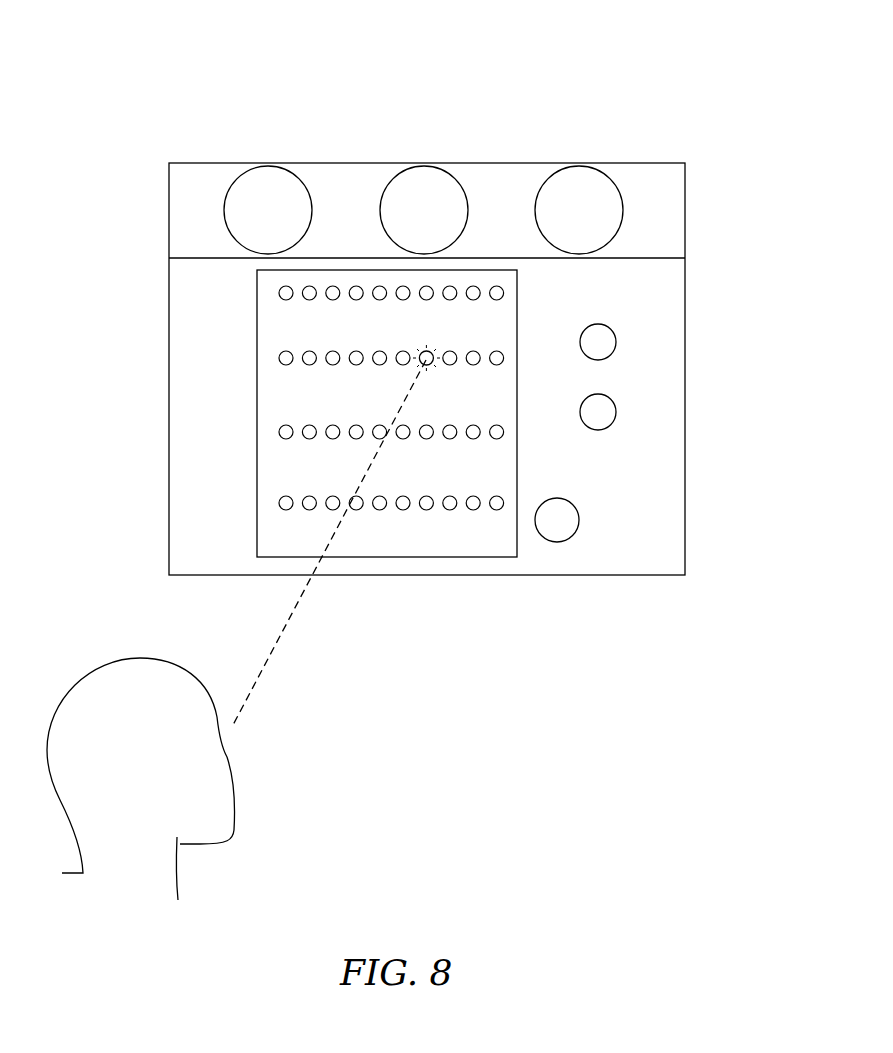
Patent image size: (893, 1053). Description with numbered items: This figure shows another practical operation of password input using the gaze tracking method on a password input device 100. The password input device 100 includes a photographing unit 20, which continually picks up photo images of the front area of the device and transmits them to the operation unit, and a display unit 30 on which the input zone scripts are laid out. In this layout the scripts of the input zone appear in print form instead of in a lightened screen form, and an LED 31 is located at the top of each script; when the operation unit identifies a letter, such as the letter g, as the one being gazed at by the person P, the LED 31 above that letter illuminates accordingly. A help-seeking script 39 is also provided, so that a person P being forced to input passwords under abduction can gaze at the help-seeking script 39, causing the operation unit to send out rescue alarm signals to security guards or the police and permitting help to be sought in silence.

The password input device 100 is at (195, 142).
The photographing unit 20 is at (638, 210).
The display unit 30 is at (270, 420).
The LED 31 is at (505, 352).
The help-seeking script 39 is at (557, 542).
The person P is at (255, 800).